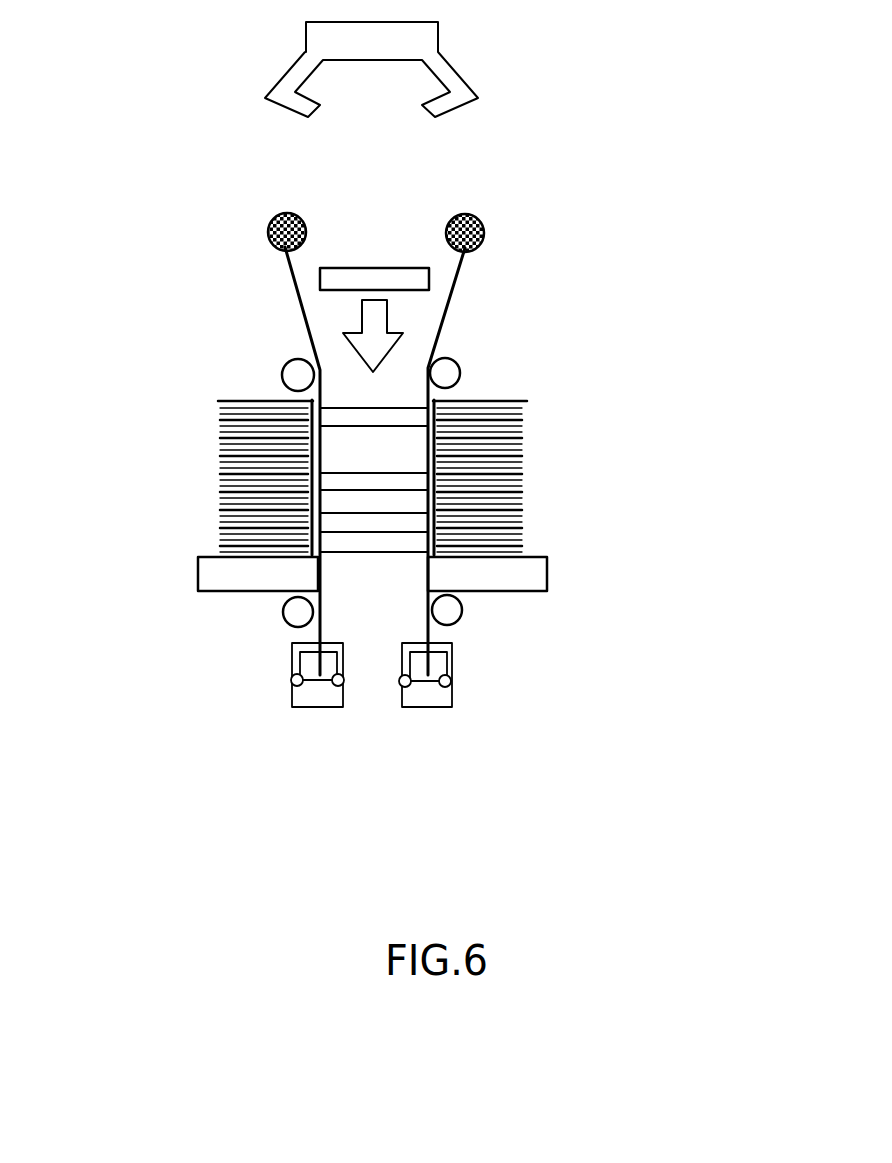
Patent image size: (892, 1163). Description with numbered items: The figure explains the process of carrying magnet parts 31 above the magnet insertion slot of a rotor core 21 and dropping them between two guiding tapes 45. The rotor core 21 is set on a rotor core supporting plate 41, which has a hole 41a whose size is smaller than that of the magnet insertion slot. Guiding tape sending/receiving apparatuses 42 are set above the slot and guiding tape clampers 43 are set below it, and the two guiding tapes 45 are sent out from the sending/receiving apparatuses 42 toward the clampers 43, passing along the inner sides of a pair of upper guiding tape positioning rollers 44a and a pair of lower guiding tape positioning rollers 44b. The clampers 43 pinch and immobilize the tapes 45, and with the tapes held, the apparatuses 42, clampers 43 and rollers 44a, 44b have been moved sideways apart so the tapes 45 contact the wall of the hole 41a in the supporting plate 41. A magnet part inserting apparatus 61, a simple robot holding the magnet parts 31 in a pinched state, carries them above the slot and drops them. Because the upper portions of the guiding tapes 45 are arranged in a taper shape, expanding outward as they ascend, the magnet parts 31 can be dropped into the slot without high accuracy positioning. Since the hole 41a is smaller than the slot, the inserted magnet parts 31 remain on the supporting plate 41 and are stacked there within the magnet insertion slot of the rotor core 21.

The magnet part inserting apparatus 61 is at (438, 38).
The magnet parts 31 is at (350, 268).
The guiding tape sending/receiving apparatuses 42 is at (267, 238).
The guiding tapes 45 is at (300, 307).
The guiding tape positioning rollers 44a is at (282, 375).
The rotor core 21 is at (220, 488).
The rotor core supporting plate 41 is at (547, 577).
The hole 41a is at (392, 578).
The guiding tape positioning rollers 44b is at (287, 613).
The guiding tape clampers 43 is at (292, 698).